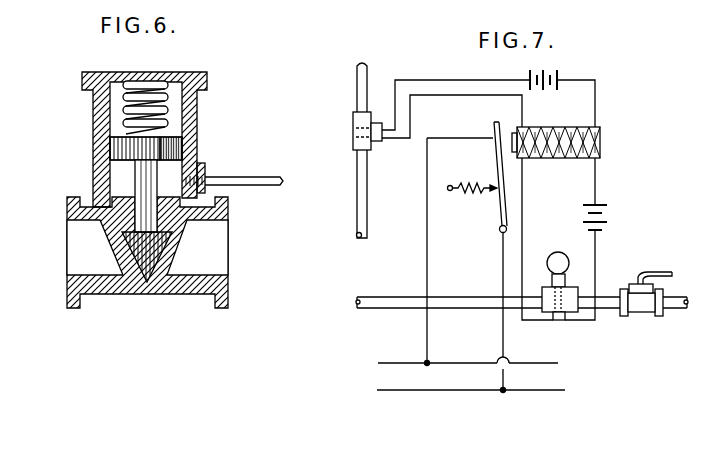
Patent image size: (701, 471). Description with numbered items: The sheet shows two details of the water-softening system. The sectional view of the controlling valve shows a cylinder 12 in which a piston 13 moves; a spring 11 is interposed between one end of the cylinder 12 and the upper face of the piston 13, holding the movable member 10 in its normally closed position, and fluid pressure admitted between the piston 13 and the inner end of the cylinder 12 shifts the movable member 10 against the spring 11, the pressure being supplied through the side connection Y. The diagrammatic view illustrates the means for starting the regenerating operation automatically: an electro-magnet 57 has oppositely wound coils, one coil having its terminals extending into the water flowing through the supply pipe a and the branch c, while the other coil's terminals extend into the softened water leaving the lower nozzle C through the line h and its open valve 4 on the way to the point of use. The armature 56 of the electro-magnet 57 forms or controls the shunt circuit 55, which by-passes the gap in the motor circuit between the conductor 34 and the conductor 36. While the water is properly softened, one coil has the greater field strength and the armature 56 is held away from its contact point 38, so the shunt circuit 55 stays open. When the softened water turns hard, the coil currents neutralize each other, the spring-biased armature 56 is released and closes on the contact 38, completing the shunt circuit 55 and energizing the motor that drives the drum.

In FIG. 6, the movable member 10 is at (150, 247).
In FIG. 6, the spring 11 is at (122, 110).
In FIG. 6, the cylinder 12 is at (95, 165).
In FIG. 6, the piston 13 is at (165, 149).
In FIG. 6, the pressure pipe Y is at (234, 145).
In FIG. 7, the water supply pipe a is at (352, 182).
In FIG. 7, the branch pipe c is at (355, 300).
In FIG. 7, the lower nozzle C is at (558, 253).
In FIG. 7, the valve 4 is at (645, 306).
In FIG. 7, the pipe h is at (682, 309).
In FIG. 7, the conductor 34 is at (470, 355).
In FIG. 7, the conductor 36 is at (484, 388).
In FIG. 7, the contact point 38 is at (492, 139).
In FIG. 7, the by-pass circuit 55 is at (428, 222).
In FIG. 7, the armature 56 is at (489, 162).
In FIG. 7, the electro-magnet 57 is at (558, 128).